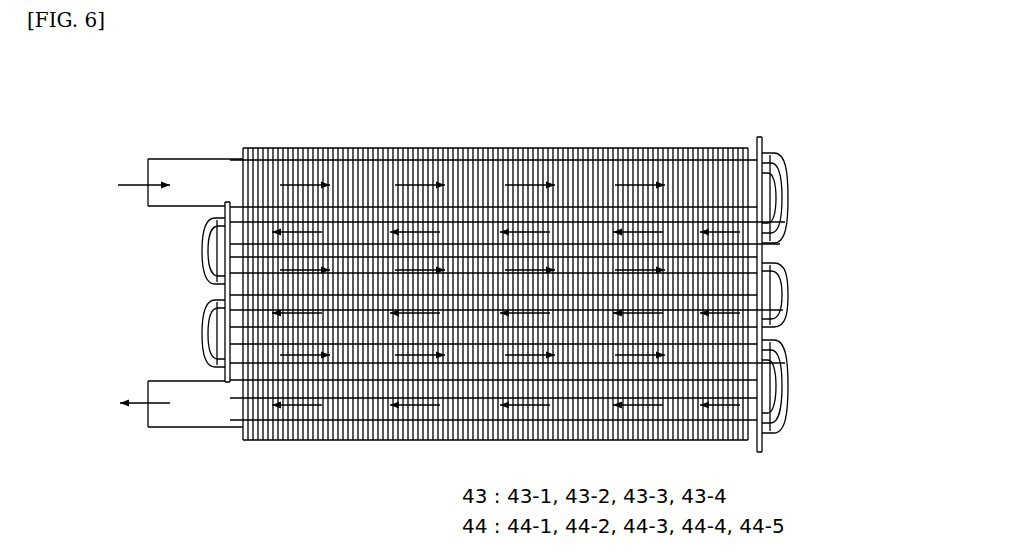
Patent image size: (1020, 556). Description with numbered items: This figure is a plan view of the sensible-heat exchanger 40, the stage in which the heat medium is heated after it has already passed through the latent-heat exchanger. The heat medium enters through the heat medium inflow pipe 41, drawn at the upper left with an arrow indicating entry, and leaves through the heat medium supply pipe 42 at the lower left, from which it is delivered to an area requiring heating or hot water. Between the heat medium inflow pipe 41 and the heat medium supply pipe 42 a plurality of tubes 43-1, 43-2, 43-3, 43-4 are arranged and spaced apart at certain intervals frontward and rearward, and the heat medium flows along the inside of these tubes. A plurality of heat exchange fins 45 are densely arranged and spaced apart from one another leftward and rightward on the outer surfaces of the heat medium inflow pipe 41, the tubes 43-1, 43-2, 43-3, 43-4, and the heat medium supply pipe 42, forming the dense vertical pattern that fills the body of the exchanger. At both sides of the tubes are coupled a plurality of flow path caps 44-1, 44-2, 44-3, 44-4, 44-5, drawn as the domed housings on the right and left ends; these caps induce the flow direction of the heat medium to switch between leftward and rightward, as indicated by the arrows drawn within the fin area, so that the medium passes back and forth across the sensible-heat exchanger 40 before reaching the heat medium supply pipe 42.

The sensible-heat exchanger 40 is at (501, 90).
The heat medium inflow pipe 41 is at (195, 167).
The heat medium supply pipe 42 is at (197, 420).
The tube 43-1 is at (785, 218).
The tube 43-2 is at (780, 247).
The tube 43-3 is at (783, 310).
The tube 43-4 is at (785, 365).
The flow path cap 44-1 is at (788, 180).
The flow path cap 44-2 is at (207, 252).
The flow path cap 44-3 is at (787, 278).
The flow path cap 44-4 is at (205, 330).
The flow path cap 44-5 is at (788, 390).
The heat exchange fins 45 is at (371, 148).